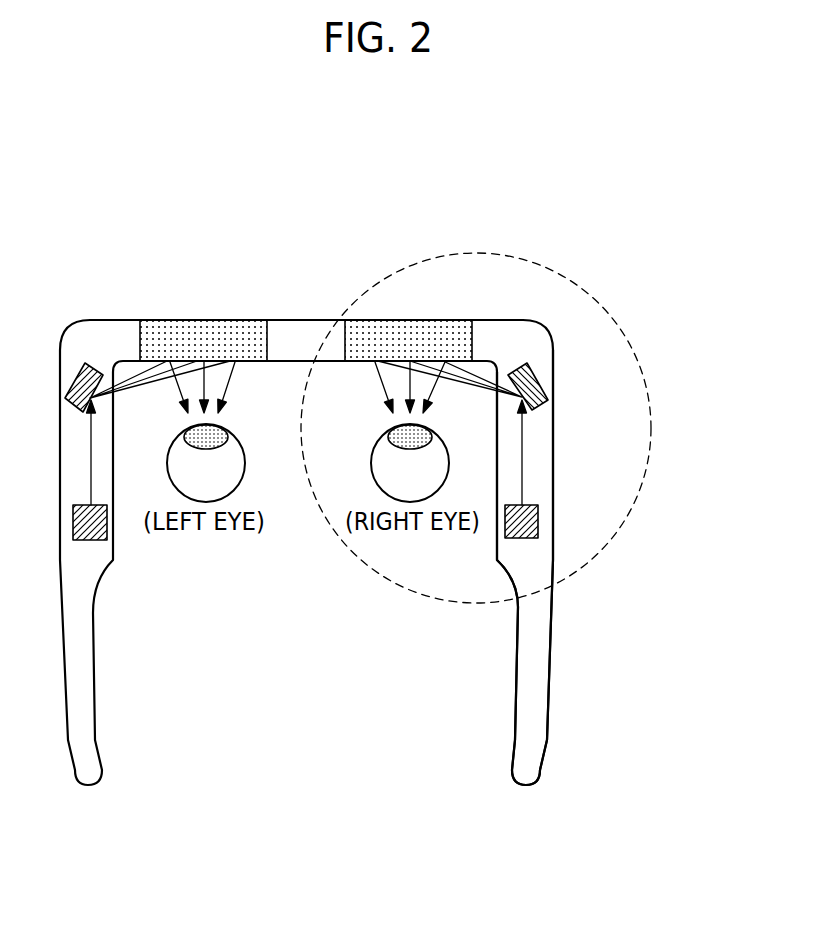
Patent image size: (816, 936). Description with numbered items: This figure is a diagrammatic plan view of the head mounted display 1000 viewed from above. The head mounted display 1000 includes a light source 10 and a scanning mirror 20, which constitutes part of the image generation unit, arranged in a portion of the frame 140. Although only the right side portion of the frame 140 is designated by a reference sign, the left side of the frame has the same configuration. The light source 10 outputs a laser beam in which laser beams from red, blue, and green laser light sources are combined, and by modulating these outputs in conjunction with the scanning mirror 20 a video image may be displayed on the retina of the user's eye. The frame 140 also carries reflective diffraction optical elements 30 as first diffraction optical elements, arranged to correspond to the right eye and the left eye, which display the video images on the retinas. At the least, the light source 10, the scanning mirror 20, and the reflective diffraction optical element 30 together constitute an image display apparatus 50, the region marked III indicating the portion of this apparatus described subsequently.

The head mounted display 1000 is at (180, 268).
The reflective diffraction optical element 30 is at (410, 320).
The image display apparatus 50 is at (552, 307).
The scanning mirror 20 is at (548, 382).
The light source 10 is at (538, 516).
The frame 140 is at (553, 603).
The viewing direction of FIG. 3 III is at (645, 375).